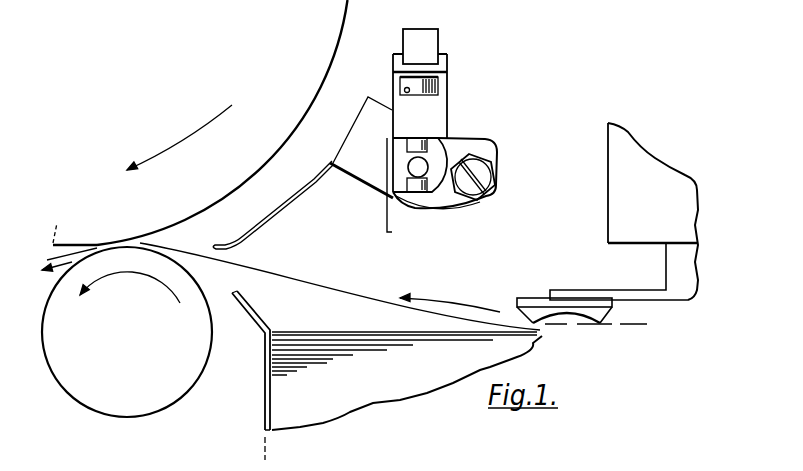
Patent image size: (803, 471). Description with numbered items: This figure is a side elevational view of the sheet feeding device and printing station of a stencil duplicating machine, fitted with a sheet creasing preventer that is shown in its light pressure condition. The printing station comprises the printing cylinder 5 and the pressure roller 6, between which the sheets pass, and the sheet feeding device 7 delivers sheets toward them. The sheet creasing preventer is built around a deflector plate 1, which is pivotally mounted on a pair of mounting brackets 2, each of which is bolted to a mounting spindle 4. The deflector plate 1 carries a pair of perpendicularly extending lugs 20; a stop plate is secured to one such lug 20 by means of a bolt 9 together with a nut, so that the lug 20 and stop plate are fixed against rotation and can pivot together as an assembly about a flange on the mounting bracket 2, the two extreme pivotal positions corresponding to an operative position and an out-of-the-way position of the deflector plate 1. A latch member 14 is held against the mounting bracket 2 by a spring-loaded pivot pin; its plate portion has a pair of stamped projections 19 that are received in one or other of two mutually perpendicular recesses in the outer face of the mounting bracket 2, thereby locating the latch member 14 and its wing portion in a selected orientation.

The deflector plate 1 is at (290, 208).
The mounting bracket 2 is at (438, 104).
The mounting spindle 4 is at (425, 47).
The printing cylinder 5 is at (190, 183).
The pressure roller 6 is at (128, 343).
The sheet feeding device 7 is at (608, 170).
The bolt 9 is at (482, 174).
The latch member 14 is at (440, 157).
The projections 19 is at (423, 193).
The lug 20 is at (348, 166).